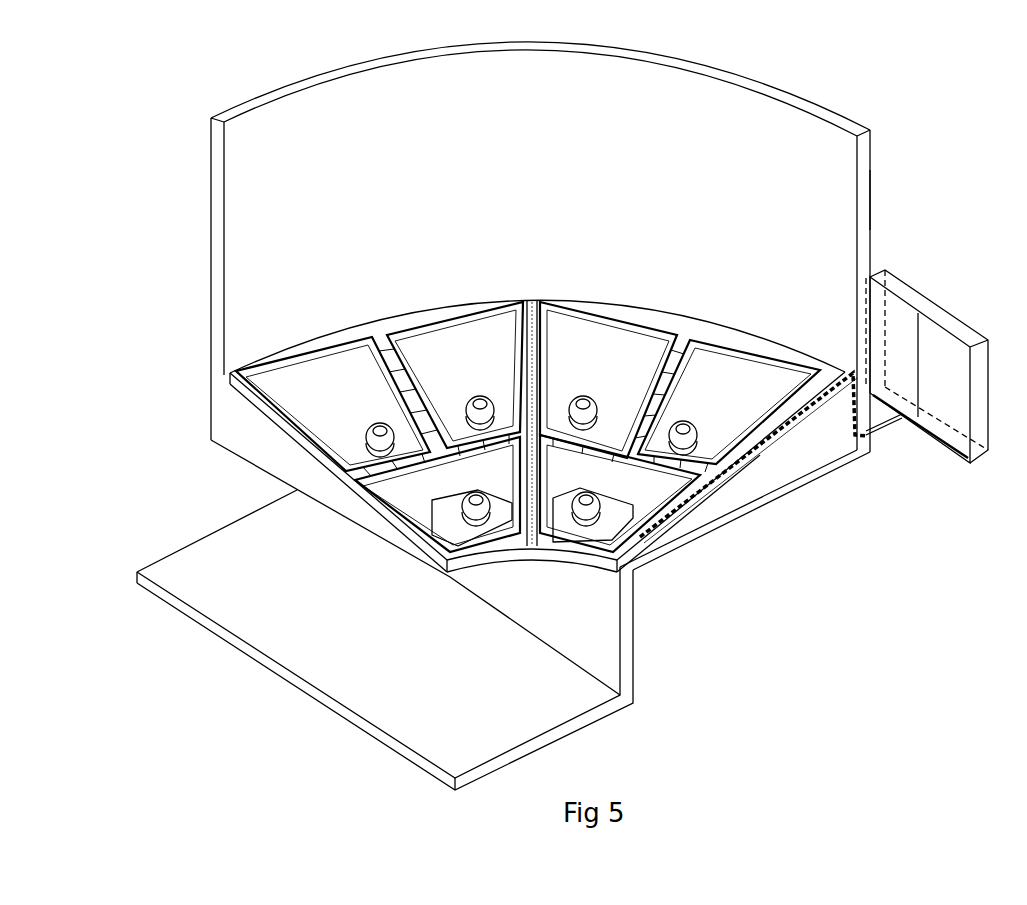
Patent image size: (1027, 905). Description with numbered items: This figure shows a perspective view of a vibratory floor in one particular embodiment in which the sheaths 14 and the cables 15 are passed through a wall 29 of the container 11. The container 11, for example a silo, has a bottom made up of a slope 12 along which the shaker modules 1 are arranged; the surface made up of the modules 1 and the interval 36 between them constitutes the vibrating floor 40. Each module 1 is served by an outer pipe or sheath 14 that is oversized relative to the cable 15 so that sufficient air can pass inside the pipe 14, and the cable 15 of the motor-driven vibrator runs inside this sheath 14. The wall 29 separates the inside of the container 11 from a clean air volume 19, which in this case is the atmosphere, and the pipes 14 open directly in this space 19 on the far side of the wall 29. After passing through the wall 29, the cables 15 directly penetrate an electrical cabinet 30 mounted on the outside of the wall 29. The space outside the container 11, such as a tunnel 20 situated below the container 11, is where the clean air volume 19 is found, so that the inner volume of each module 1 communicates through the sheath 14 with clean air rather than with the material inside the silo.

The module 1 is at (487, 327).
The container 11 is at (694, 144).
The slope 12 is at (752, 501).
The outer pipe 14 is at (805, 435).
The cable 15 is at (899, 439).
The clean air volume 19 is at (903, 89).
The tunnel 20 is at (464, 697).
The wall 29 is at (874, 183).
The electrical cabinet 30 is at (888, 281).
The interval 36 is at (533, 561).
The vibrating floor 40 is at (437, 304).